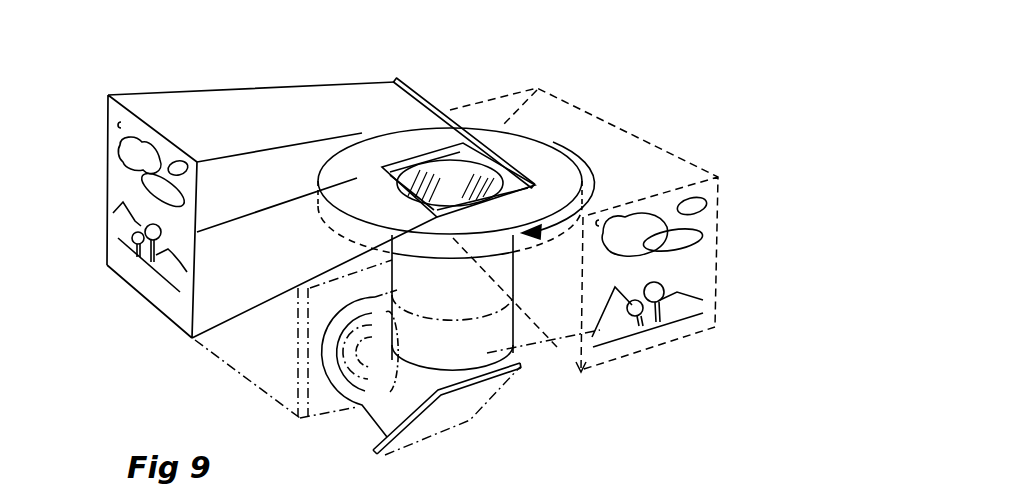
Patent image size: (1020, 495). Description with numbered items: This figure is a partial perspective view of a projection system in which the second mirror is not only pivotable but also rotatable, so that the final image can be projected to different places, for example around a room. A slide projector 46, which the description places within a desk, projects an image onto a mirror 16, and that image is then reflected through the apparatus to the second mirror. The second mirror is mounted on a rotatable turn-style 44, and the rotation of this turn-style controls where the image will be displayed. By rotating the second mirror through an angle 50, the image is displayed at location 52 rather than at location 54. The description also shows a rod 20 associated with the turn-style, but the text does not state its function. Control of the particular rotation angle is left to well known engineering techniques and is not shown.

The mirror 16 is at (452, 417).
The rod 20 is at (425, 102).
The rotatable turn-style 44 is at (368, 152).
The slide projector 46 is at (243, 347).
The angle 50 is at (597, 165).
The location 52 is at (128, 262).
The location 54 is at (688, 278).